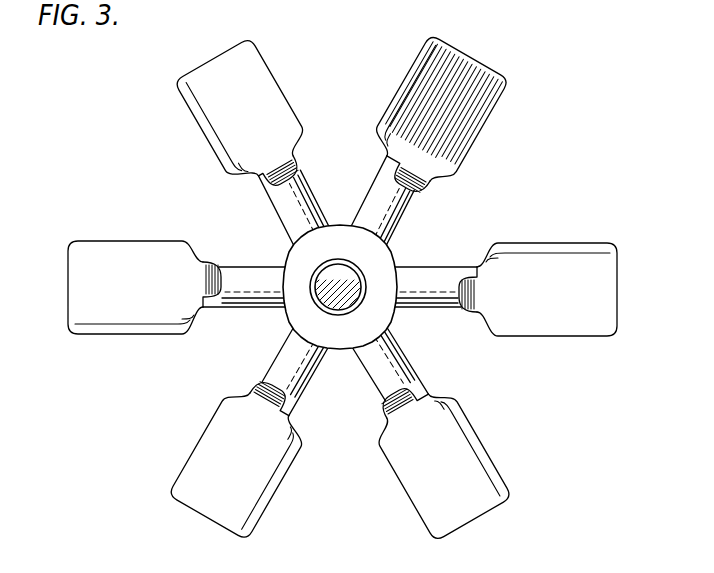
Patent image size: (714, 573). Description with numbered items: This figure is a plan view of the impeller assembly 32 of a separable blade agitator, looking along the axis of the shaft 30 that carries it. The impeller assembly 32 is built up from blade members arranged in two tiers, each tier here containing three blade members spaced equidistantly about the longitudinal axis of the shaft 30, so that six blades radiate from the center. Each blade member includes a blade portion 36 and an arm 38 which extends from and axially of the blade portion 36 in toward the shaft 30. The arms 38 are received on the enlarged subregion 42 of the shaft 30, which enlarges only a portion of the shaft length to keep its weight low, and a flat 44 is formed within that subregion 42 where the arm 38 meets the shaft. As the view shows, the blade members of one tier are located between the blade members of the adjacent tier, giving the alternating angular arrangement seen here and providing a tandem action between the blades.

The shaft 30 is at (340, 290).
The impeller assembly 32 is at (475, 159).
The blade portion 36 is at (127, 254).
The arm 38 is at (213, 268).
The second region (subregion) 42 is at (388, 268).
The flat 44 is at (367, 231).